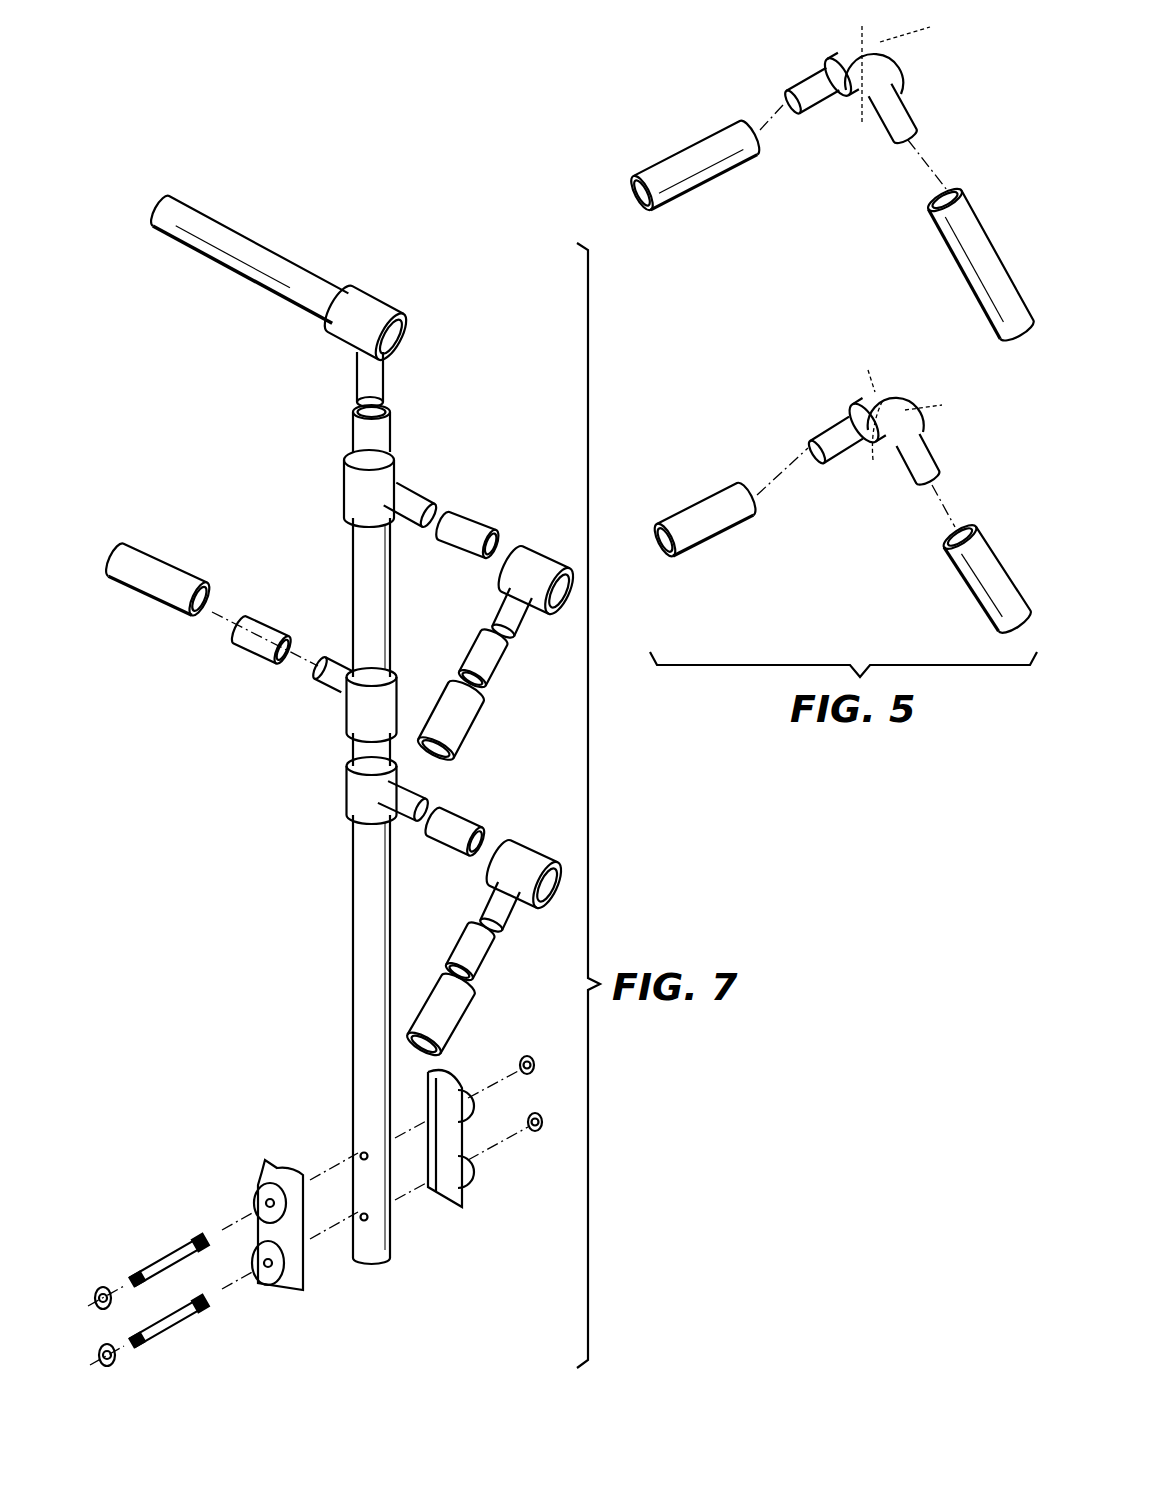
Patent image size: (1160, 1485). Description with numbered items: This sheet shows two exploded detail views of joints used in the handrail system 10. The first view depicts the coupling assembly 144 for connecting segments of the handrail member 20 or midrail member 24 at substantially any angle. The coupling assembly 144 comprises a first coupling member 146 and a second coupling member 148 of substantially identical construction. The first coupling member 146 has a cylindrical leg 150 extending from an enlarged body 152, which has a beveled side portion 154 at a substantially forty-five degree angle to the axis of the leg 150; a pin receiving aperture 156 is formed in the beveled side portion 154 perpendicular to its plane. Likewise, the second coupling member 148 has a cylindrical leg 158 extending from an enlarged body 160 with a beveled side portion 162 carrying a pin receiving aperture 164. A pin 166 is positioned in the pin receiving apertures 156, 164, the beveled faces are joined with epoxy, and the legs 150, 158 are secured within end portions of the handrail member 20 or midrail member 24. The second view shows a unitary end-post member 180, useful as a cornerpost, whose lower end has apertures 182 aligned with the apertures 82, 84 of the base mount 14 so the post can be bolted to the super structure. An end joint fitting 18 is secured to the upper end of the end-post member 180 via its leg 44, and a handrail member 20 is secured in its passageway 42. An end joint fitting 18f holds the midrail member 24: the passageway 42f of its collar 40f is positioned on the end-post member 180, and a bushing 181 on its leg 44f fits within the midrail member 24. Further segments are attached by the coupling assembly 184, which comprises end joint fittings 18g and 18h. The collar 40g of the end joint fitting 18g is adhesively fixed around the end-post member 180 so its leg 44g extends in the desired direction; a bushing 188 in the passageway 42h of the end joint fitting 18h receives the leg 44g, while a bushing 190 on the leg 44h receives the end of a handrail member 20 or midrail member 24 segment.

In FIG. 7, the handrail system 10 is at (352, 226).
In FIG. 7, the base mount 14 is at (315, 1211).
In FIG. 7, the end joint fitting 18 is at (410, 341).
In FIG. 7, the end joint fitting 18f is at (352, 688).
In FIG. 7, the end joint fitting 18g is at (405, 436).
In FIG. 7, the end joint fitting 18h is at (530, 730).
In FIG. 7, the handrail member 20 is at (237, 243).
In FIG. 5, the handrail member 20 is at (680, 152).
In FIG. 7, the midrail member 24 is at (168, 570).
In FIG. 5, the midrail member 24 is at (708, 505).
In FIG. 7, the collar 40f is at (398, 680).
In FIG. 7, the collar 40g is at (352, 478).
In FIG. 7, the passageway 42 is at (396, 344).
In FIG. 7, the passageway 42f is at (390, 675).
In FIG. 7, the passageway 42h is at (564, 612).
In FIG. 7, the leg 44 is at (395, 385).
In FIG. 7, the leg 44f is at (338, 667).
In FIG. 7, the leg 44g is at (410, 497).
In FIG. 7, the leg 44h is at (515, 625).
In FIG. 7, the apertures 82 is at (470, 1092).
In FIG. 7, the apertures 84 is at (270, 1205).
In FIG. 5, the coupling assembly 144 is at (874, 268).
In FIG. 5, the first coupling member 146 is at (835, 60).
In FIG. 5, the second coupling member 148 is at (900, 80).
In FIG. 5, the leg 150 is at (810, 110).
In FIG. 5, the body 152 is at (848, 58).
In FIG. 5, the beveled side portion 154 is at (883, 48).
In FIG. 5, the pin receiving aperture 156 is at (865, 265).
In FIG. 5, the leg 158 is at (910, 120).
In FIG. 5, the body 160 is at (905, 95).
In FIG. 5, the beveled side portion 162 is at (895, 62).
In FIG. 5, the pin receiving aperture 164 is at (927, 214).
In FIG. 5, the pin 166 is at (865, 200).
In FIG. 7, the end-post member 180 is at (349, 829).
In FIG. 7, the bushing 181 is at (262, 628).
In FIG. 7, the apertures 182 is at (360, 1215).
In FIG. 7, the coupling assembly 184 is at (429, 701).
In FIG. 7, the bushing 188 is at (470, 532).
In FIG. 7, the bushing 190 is at (492, 675).